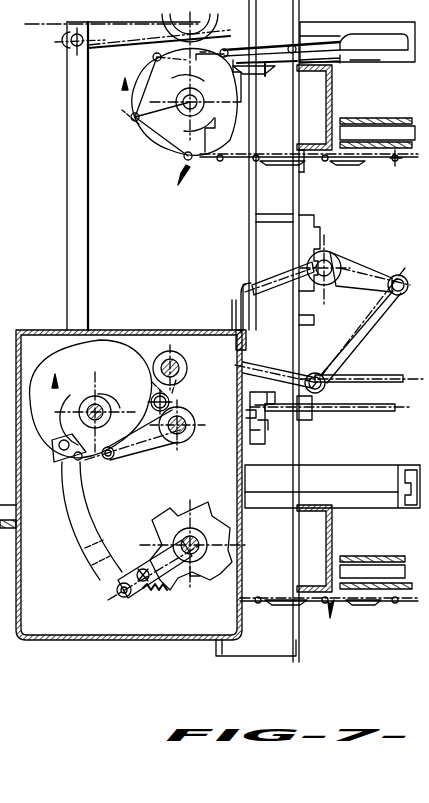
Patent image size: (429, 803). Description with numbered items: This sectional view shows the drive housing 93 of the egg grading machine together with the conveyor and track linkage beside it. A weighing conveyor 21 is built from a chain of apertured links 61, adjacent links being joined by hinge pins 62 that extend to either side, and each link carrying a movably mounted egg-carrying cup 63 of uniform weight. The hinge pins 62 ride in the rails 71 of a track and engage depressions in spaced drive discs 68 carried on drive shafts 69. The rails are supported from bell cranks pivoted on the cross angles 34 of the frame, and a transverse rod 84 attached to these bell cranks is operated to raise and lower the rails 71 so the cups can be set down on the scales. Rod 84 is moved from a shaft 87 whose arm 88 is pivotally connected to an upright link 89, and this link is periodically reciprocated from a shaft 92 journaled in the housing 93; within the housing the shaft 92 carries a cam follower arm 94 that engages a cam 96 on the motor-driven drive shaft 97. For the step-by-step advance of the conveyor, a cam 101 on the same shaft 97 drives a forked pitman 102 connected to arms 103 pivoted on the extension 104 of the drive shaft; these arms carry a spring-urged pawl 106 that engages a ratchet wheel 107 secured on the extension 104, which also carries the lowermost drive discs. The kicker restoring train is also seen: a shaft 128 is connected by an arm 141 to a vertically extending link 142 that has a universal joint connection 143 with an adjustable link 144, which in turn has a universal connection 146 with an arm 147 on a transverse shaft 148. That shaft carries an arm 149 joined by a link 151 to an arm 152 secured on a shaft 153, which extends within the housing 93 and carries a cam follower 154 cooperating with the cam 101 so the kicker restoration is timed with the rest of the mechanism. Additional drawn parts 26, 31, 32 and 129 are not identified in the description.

The weighing conveyor 21 is at (176, 180).
The guide rail 26 is at (396, 114).
The frame column 31 is at (249, 198).
The bracket 32 is at (332, 101).
The cross angles 34 is at (390, 60).
The links 61 is at (262, 157).
The hinge pin 62 is at (396, 164).
The egg-carrying cup 63 is at (265, 64).
The drive discs 68 is at (170, 140).
The drive shafts 69 is at (148, 128).
The rails 71 is at (363, 55).
The rod 84 is at (394, 374).
The shaft 87 is at (300, 41).
The arm 88 is at (100, 48).
The upright link 89 is at (67, 235).
The shaft 92 is at (197, 442).
The drive housing 93 is at (95, 640).
The cam follower arm 94 is at (143, 457).
The cam 96 is at (112, 392).
The drive shaft 97 is at (78, 414).
The cam 101 is at (64, 366).
The forked pitman 102 is at (78, 526).
The arms 103 is at (165, 548).
The extension of shaft 104 is at (200, 512).
The spring-urged pawl 106 is at (165, 595).
The ratchet wheel 107 is at (206, 585).
The shaft 128 is at (352, 414).
The block 129 is at (310, 422).
The arm 141 is at (272, 436).
The vertically extending link 142 is at (256, 222).
The universal joint connection 143 is at (244, 400).
The adjustable link 144 is at (236, 311).
The universal connection 146 is at (242, 280).
The arm 147 is at (275, 275).
The transverse shaft 148 is at (330, 255).
The arm 149 is at (370, 270).
The link 151 is at (372, 321).
The arm 152 is at (270, 368).
The shaft 153 is at (188, 363).
The cam follower 154 is at (178, 392).